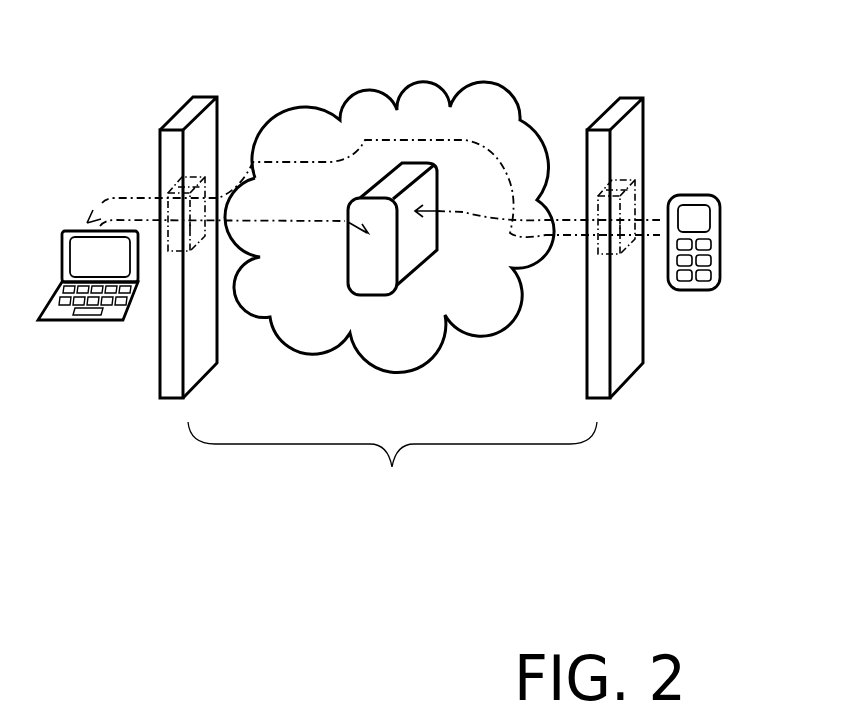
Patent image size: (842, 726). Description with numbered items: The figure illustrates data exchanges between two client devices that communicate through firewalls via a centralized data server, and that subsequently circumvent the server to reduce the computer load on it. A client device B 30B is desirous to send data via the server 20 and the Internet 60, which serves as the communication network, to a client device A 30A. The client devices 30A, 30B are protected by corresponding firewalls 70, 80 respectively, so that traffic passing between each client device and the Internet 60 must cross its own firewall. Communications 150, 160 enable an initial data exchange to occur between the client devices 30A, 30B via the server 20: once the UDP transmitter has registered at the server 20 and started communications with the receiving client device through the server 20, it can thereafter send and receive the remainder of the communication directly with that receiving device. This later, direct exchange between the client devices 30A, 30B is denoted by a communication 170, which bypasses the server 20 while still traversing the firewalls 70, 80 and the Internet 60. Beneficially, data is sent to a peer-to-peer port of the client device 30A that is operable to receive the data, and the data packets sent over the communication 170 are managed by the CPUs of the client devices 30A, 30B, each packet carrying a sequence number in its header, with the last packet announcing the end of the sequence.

The server 20 is at (313, 294).
The client device A 30A is at (55, 313).
The client device B 30B is at (692, 284).
The Internet 60 is at (392, 312).
The firewall 70 is at (195, 96).
The firewall 80 is at (624, 97).
The communication 150 is at (570, 237).
The communication 160 is at (268, 222).
The communication 170 is at (300, 162).